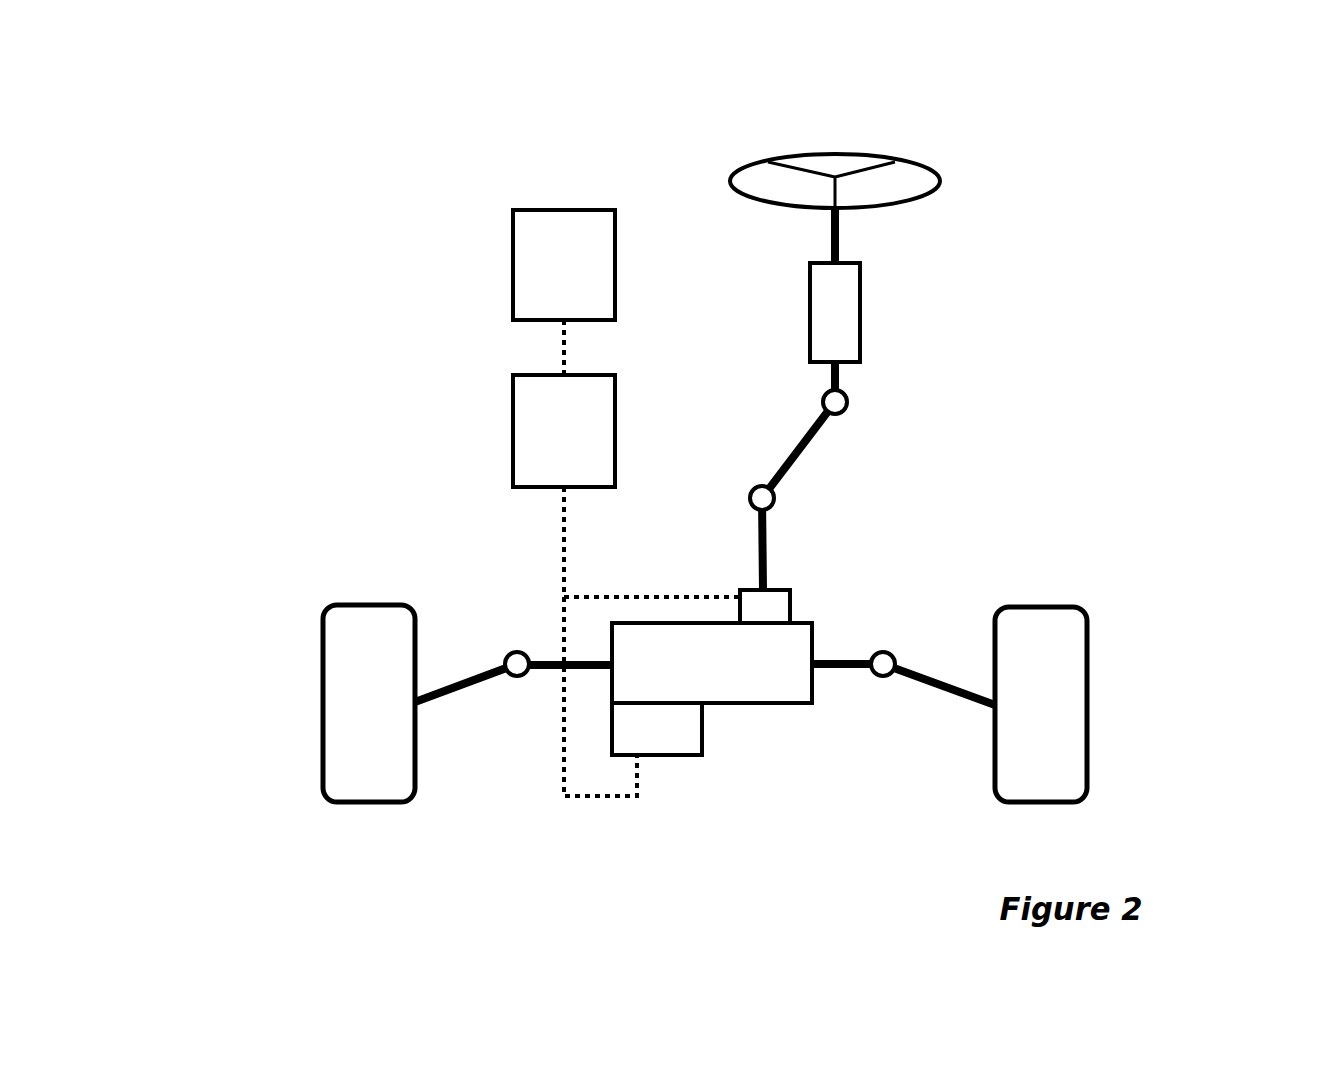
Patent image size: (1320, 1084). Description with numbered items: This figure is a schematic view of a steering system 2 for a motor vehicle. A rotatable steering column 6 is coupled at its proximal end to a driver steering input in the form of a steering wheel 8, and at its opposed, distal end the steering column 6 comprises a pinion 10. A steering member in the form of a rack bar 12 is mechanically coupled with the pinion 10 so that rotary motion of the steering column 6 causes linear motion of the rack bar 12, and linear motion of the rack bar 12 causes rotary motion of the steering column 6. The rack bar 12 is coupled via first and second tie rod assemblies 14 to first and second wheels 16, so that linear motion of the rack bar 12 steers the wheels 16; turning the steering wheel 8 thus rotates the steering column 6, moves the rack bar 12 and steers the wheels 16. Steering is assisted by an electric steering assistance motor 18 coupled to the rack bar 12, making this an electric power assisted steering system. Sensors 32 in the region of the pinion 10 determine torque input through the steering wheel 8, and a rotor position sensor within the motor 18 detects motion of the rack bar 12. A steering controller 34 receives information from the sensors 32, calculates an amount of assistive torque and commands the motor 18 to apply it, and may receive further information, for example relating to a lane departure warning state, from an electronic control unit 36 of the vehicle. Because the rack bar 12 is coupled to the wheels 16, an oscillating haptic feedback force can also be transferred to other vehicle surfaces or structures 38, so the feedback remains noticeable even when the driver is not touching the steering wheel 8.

The steering system 2 is at (902, 388).
The steering column 6 is at (867, 288).
The steering wheel 8 is at (800, 140).
The pinion 10 is at (813, 602).
The rack bar 12 is at (775, 675).
The tie rod assemblies 14 is at (452, 707).
The wheels 16 is at (365, 695).
The electric steering assistance motor 18 is at (664, 734).
The sensors 32 is at (813, 617).
The steering controller 34 is at (553, 415).
The electronic control unit 36 is at (537, 240).
The vehicle surfaces or structures 38 is at (495, 525).